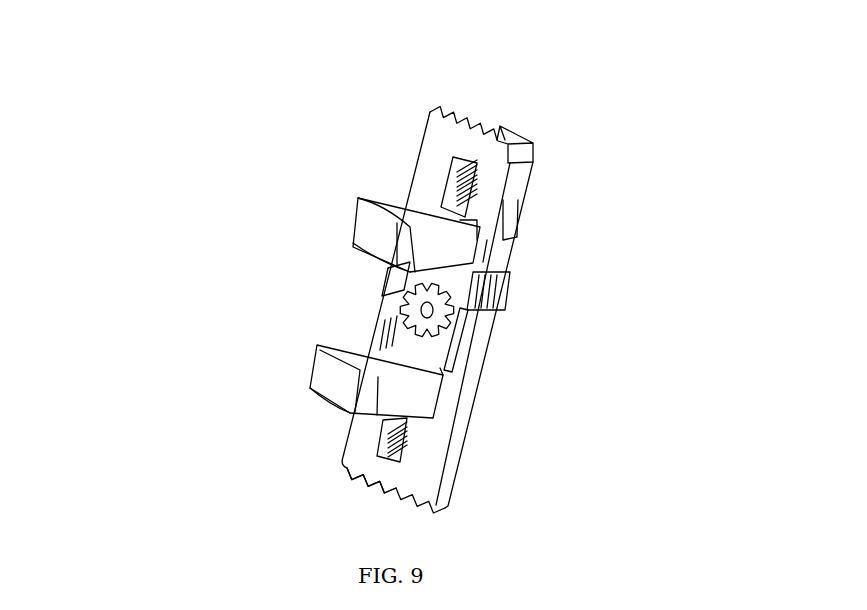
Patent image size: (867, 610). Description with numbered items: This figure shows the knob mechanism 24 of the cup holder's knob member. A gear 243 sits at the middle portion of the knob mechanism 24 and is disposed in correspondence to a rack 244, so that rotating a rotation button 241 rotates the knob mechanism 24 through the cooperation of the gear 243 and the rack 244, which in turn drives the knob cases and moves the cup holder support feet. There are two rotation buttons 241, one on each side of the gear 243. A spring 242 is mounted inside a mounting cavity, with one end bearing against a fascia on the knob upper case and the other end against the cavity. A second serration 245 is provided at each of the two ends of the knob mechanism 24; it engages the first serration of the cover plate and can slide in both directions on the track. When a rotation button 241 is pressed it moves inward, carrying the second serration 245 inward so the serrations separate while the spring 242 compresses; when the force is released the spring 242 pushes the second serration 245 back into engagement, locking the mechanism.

The knob mechanism 24 is at (455, 138).
The rotation button 241 is at (362, 234).
The spring 242 is at (380, 440).
The gear 243 is at (473, 323).
The rack 244 is at (463, 277).
The second serration 245 is at (357, 485).